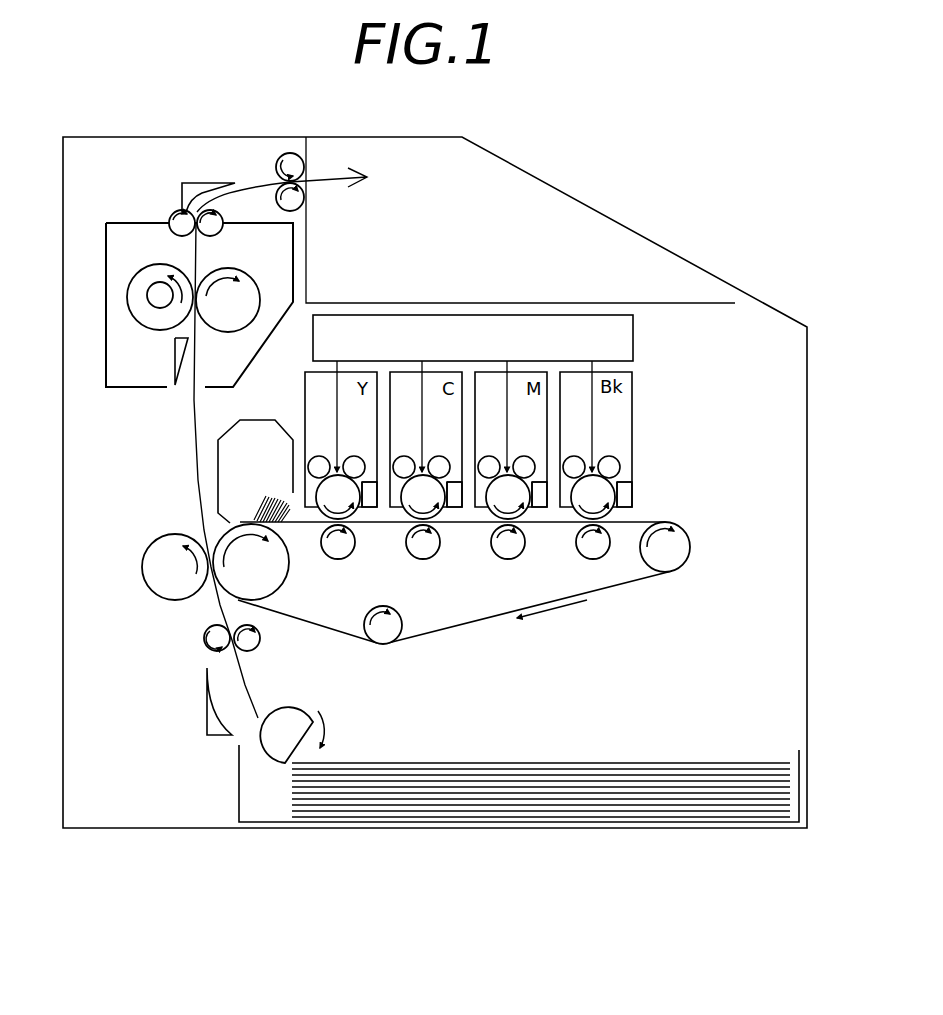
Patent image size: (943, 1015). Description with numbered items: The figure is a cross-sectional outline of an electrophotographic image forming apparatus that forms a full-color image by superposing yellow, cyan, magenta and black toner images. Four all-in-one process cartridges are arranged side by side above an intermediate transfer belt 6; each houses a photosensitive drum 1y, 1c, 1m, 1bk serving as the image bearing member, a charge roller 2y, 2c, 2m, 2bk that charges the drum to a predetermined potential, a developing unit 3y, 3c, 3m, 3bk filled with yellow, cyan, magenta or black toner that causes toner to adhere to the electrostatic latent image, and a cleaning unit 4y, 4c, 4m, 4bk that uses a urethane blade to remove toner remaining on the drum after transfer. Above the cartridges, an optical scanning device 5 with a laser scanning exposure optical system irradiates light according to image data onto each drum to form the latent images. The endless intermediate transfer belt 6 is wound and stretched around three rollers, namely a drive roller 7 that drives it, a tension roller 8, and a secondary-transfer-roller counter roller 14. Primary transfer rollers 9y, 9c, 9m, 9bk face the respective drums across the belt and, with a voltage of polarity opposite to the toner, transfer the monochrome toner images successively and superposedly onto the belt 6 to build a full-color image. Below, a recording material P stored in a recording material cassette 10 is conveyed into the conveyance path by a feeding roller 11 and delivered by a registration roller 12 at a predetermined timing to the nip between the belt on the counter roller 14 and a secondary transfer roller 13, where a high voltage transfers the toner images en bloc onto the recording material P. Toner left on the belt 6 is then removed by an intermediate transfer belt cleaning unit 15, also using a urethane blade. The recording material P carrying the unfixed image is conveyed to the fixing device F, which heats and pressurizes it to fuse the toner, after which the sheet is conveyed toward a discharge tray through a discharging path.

The fixing device F is at (112, 222).
The photosensitive drum 1y is at (338, 497).
The photosensitive drum 1c is at (423, 497).
The photosensitive drum 1m is at (508, 497).
The photosensitive drum 1bk is at (593, 497).
The charge roller 2y is at (345, 472).
The charge roller 2c is at (430, 472).
The charge roller 2m is at (515, 472).
The charge roller 2bk is at (606, 466).
The developing unit 3y is at (330, 470).
The developing unit 3c is at (415, 470).
The developing unit 3m is at (500, 470).
The developing unit 3bk is at (574, 465).
The cleaning unit 4y is at (363, 486).
The cleaning unit 4c is at (448, 486).
The cleaning unit 4m is at (533, 486).
The cleaning unit 4bk is at (618, 488).
The optical scanning device 5 is at (630, 328).
The intermediate transfer belt 6 is at (643, 580).
The drive roller 7 is at (665, 548).
The tension roller 8 is at (383, 627).
The primary transfer roller 9y is at (338, 544).
The primary transfer roller 9c is at (423, 544).
The primary transfer roller 9m is at (508, 544).
The primary transfer roller 9bk is at (593, 544).
The recording material cassette 10 is at (647, 820).
The feeding roller 11 is at (290, 747).
The registration roller 12 is at (210, 645).
The secondary transfer roller 13 is at (170, 592).
The secondary-transfer-roller counter roller 14 is at (265, 588).
The intermediate transfer belt cleaning unit 15 is at (262, 498).
The recording material P is at (617, 768).